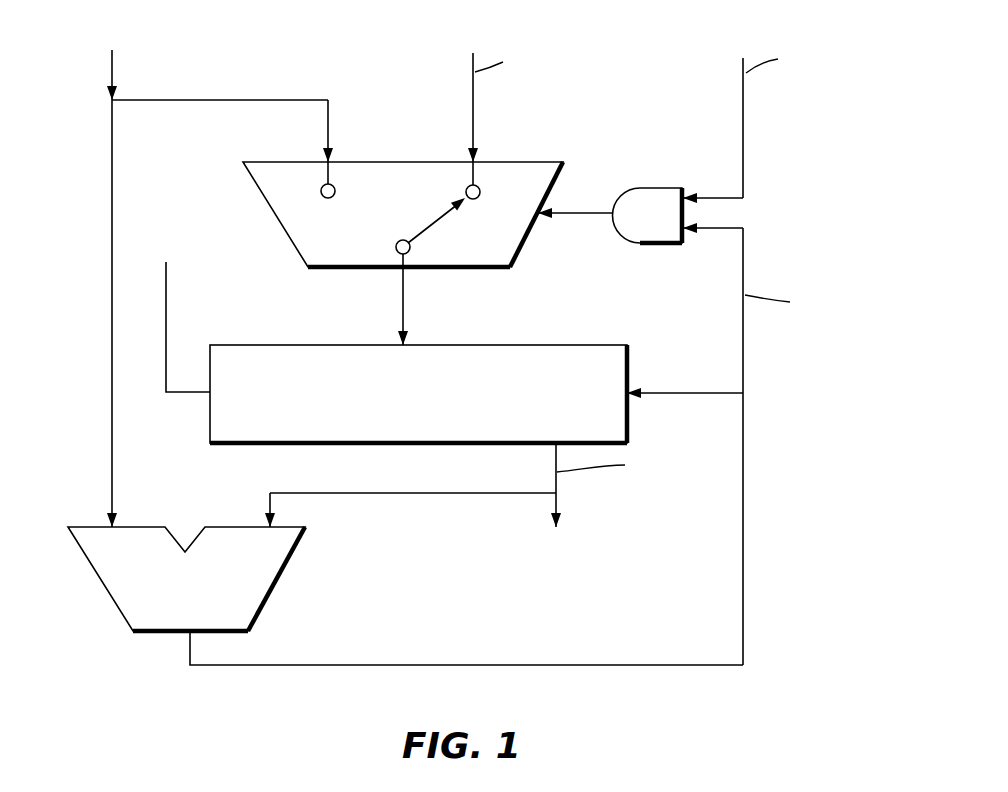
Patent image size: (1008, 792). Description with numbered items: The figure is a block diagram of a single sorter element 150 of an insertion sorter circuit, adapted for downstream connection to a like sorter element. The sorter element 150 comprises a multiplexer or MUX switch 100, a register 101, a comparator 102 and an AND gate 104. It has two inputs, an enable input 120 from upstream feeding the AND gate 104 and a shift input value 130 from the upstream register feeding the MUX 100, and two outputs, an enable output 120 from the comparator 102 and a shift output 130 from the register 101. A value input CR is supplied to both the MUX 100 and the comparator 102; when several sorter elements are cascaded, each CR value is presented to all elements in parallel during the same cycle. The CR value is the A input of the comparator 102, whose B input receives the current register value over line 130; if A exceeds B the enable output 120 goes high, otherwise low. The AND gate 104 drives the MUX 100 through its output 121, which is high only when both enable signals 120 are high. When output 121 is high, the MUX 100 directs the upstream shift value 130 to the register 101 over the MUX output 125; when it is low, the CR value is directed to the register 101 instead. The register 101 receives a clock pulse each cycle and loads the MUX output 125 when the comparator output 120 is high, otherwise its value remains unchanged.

The multiplexer (MUX) switch 100 is at (537, 162).
The register 101 is at (263, 348).
The comparator 102 is at (82, 527).
The AND gate 104 is at (653, 243).
The enable output / enable input 120 is at (745, 157).
The AND gate output 121 is at (572, 216).
The MUX output 125 is at (403, 298).
The shift output / shift input value 130 is at (471, 90).
The sorter element 150 is at (677, 53).